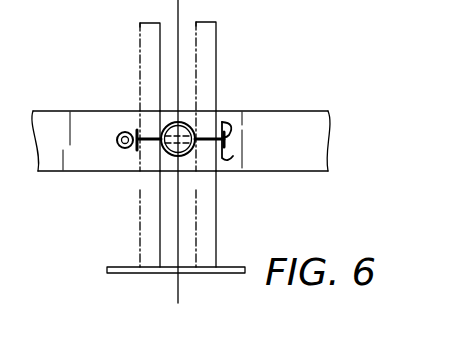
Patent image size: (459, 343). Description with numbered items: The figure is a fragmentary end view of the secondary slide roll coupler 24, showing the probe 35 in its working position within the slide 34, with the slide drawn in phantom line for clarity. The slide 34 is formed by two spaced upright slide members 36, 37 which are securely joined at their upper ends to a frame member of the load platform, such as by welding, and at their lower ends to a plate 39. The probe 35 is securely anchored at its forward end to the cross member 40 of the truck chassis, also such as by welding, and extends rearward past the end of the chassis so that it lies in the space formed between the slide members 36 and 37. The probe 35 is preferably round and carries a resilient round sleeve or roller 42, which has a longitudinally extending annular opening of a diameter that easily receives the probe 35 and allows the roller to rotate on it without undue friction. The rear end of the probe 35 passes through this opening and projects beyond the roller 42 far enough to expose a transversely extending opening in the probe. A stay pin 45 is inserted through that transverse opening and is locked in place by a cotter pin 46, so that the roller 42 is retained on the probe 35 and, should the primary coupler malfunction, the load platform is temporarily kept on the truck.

The secondary slide roll coupler 24 is at (217, 197).
The slide 34 is at (216, 33).
The probe 35 is at (168, 150).
The slide member 36 is at (208, 233).
The slide member 37 is at (150, 241).
The plate 39 is at (213, 275).
The cross member 40 is at (320, 162).
The resilient round sleeve or roller 42 is at (200, 127).
The stay pin 45 is at (122, 133).
The cotter pin 46 is at (232, 128).